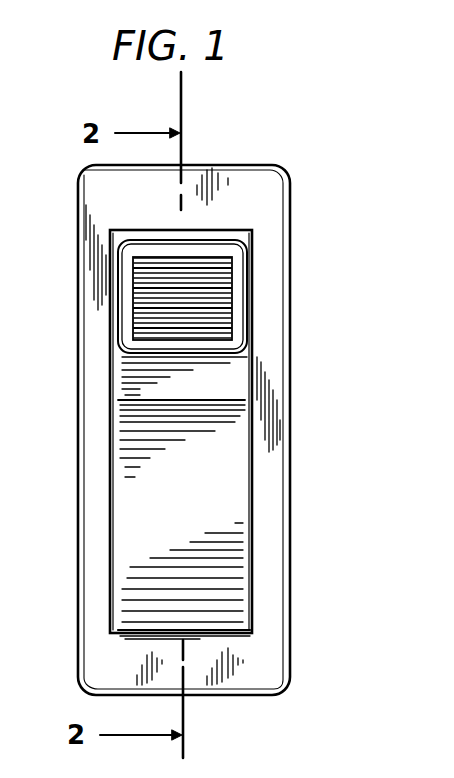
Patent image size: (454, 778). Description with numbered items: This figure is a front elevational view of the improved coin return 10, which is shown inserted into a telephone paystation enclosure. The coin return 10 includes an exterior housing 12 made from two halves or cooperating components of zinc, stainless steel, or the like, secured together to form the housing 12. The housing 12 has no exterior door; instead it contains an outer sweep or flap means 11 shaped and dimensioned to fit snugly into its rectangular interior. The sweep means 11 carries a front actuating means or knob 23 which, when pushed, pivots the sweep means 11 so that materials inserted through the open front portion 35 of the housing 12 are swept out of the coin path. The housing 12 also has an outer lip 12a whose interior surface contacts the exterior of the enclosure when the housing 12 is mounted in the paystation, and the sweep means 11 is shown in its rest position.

The coin return 10 is at (260, 154).
The exterior housing 12 is at (287, 203).
The outer lip 12a is at (273, 465).
The sweep means 11 is at (183, 357).
The front actuating means or knob 23 is at (240, 290).
The open front portion 35 is at (203, 508).